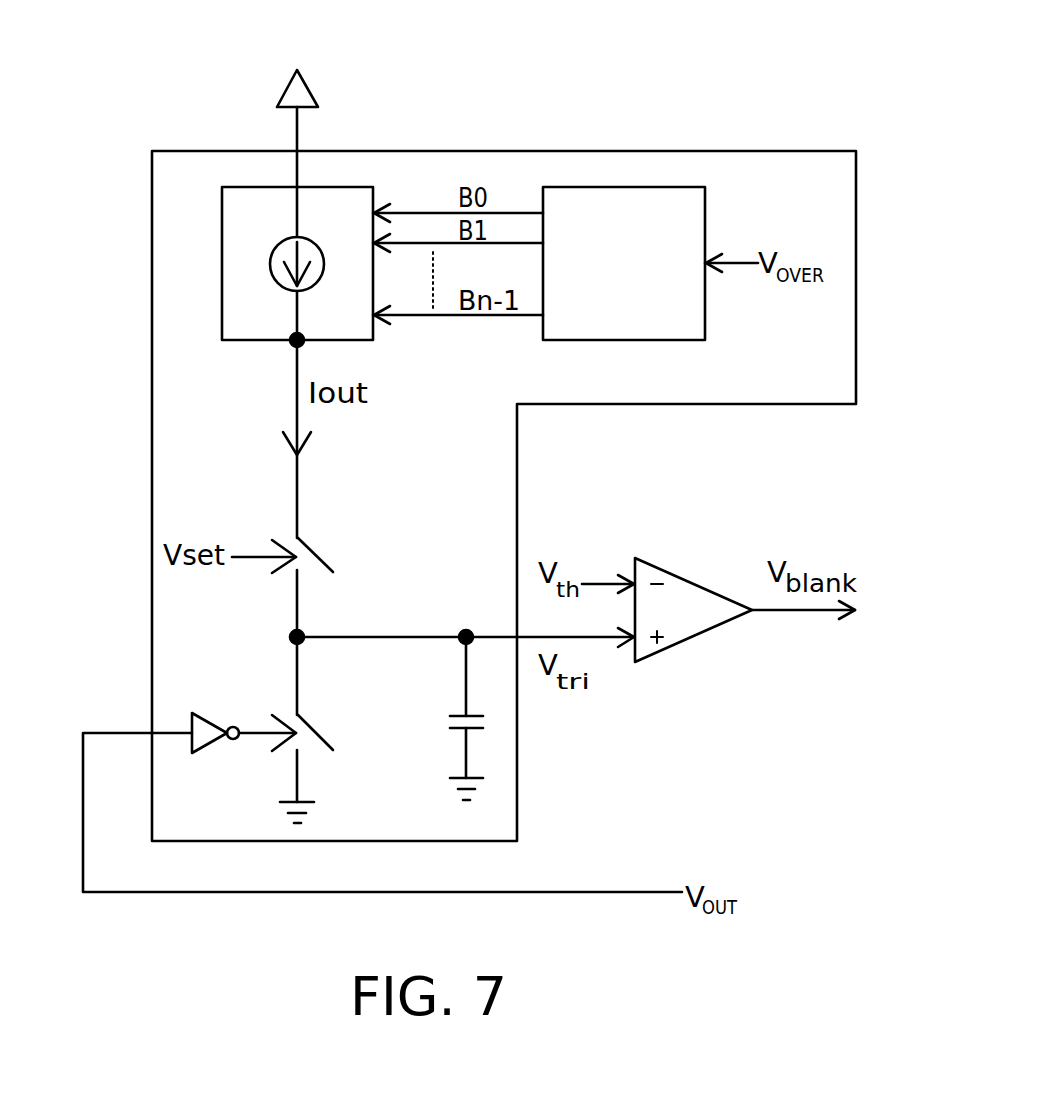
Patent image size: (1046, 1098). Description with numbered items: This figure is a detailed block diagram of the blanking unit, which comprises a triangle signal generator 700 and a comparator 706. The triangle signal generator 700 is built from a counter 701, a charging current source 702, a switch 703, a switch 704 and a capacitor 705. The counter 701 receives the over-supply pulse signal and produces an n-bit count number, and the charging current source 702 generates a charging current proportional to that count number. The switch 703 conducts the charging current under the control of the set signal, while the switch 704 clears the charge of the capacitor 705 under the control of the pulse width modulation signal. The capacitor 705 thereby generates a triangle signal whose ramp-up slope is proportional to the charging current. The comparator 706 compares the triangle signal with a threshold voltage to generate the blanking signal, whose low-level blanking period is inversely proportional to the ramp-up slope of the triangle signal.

The triangle signal generator 700 is at (455, 151).
The counter 701 is at (628, 187).
The charging current source 702 is at (222, 262).
The switch 703 is at (312, 543).
The switch 704 is at (317, 725).
The capacitor 705 is at (488, 722).
The comparator 706 is at (692, 580).